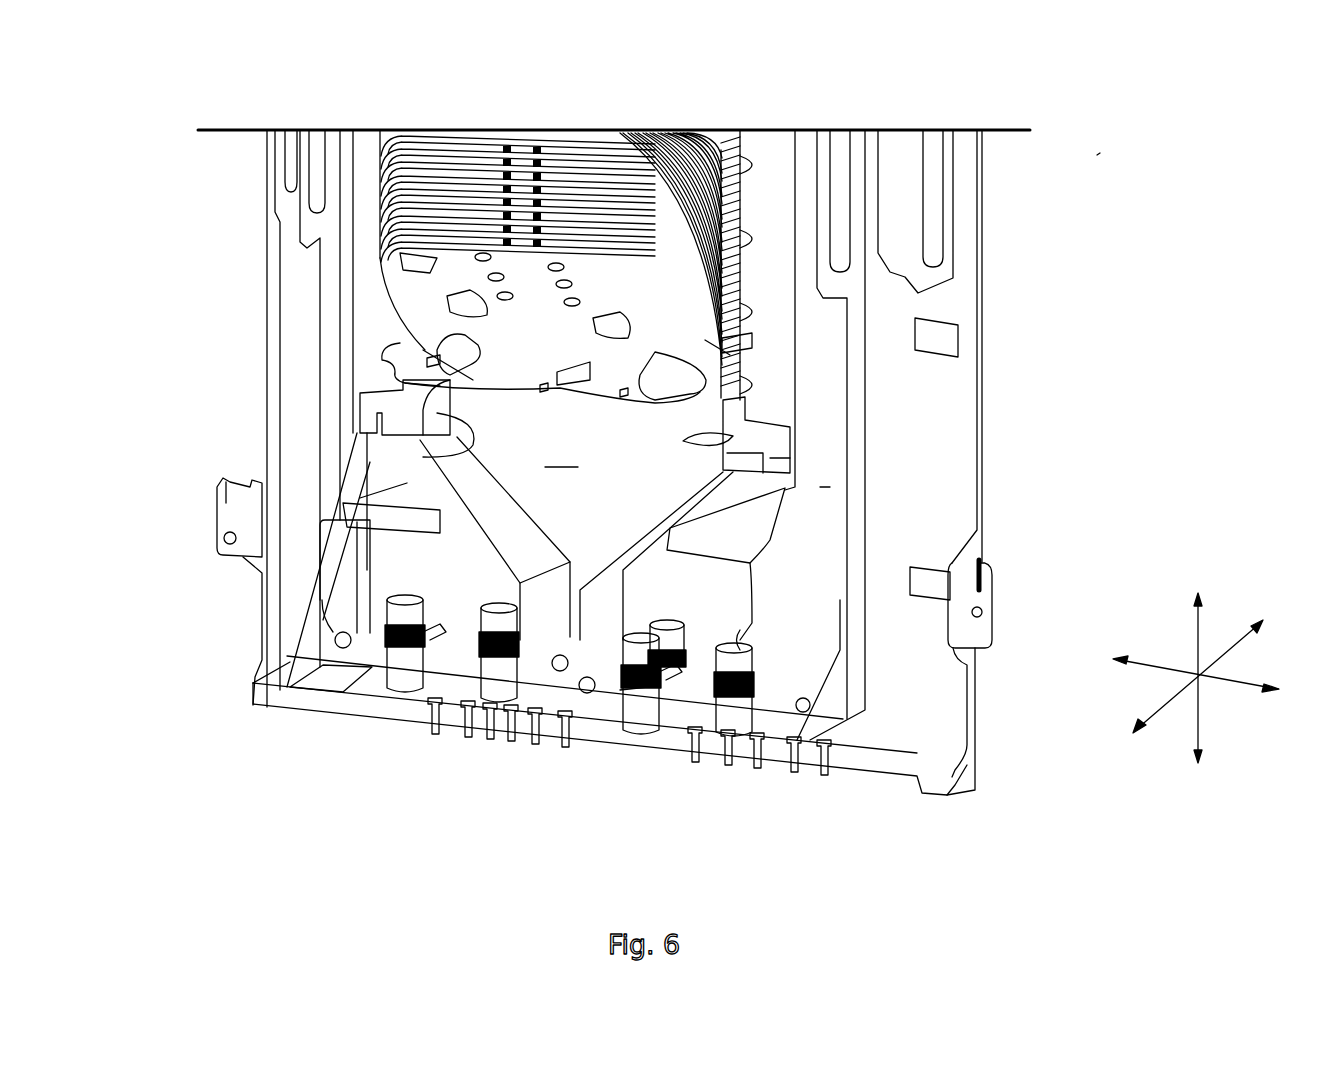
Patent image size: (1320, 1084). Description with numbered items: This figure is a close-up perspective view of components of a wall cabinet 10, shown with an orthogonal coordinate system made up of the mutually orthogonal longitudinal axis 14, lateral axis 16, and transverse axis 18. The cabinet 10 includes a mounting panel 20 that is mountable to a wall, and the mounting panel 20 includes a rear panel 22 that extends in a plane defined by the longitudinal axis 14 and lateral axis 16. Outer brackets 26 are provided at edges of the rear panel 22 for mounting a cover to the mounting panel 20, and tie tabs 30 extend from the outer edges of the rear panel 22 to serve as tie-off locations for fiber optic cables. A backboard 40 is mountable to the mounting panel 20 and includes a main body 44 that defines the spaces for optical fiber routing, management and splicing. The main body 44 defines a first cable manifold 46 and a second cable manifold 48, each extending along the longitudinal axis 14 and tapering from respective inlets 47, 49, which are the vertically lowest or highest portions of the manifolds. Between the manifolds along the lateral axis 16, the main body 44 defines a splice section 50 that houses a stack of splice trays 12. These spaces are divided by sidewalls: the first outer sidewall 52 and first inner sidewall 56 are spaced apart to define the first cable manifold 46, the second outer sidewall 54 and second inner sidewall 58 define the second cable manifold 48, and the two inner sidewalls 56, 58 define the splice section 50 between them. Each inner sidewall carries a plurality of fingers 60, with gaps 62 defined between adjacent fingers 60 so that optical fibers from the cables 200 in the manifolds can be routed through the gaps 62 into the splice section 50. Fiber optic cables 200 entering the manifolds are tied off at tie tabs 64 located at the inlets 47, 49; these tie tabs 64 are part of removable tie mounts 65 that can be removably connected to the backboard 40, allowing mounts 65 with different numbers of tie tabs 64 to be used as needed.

The wall cabinet 10 is at (1096, 158).
The splice trays 12 is at (430, 175).
The longitudinal axis 14 is at (1197, 638).
The lateral axis 16 is at (1233, 688).
The transverse axis 18 is at (1233, 652).
The mounting panel 20 is at (1018, 256).
The rear panel 22 is at (930, 732).
The outer brackets 26 is at (985, 600).
The tie tabs 30 is at (510, 718).
The backboard 40 is at (828, 131).
The main body 44 is at (818, 487).
The first cable manifold 46 is at (407, 482).
The inlet 47 is at (372, 610).
The second cable manifold 48 is at (750, 500).
The inlet 49 is at (603, 633).
The splice section 50 is at (543, 361).
The first outer sidewall 52 is at (352, 305).
The second outer sidewall 54 is at (815, 388).
The first inner sidewall 56 is at (423, 457).
The second inner sidewall 58 is at (738, 455).
The fingers 60 is at (408, 388).
The gaps 62 is at (430, 367).
The tie tabs 64 is at (420, 603).
The removable tie mounts 65 is at (367, 653).
The fiber optic cables 200 is at (493, 680).